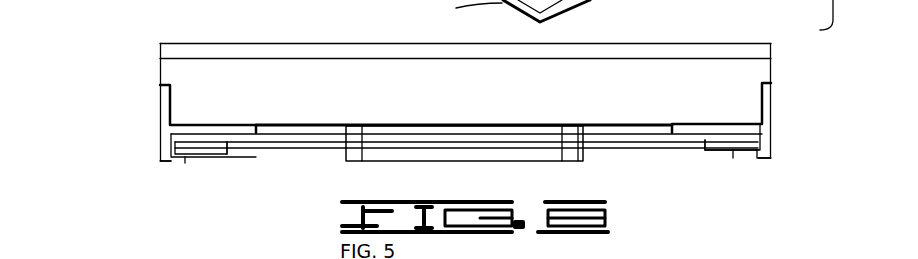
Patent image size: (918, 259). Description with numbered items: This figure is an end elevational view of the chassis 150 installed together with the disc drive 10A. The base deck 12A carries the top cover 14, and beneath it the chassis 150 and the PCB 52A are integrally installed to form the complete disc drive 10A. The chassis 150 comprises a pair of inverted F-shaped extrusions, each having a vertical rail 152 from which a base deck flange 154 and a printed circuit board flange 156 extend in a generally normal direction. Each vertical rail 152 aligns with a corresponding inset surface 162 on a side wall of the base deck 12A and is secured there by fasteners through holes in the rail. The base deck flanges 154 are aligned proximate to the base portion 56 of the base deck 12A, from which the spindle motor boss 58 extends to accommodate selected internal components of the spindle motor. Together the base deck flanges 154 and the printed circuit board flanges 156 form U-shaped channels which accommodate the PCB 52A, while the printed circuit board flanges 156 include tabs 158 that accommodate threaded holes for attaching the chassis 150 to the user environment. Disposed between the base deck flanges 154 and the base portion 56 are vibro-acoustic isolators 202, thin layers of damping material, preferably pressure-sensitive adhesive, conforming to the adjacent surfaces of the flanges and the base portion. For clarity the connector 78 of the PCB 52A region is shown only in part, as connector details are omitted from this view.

The disc drive 10A is at (155, 28).
The base deck 12A is at (173, 67).
The top cover 14 is at (325, 43).
The PCB 52A is at (250, 152).
The base portion 56 is at (332, 124).
The spindle motor boss 58 is at (465, 160).
The connector 78 is at (480, 4).
The chassis 150 is at (158, 132).
The vertical rail 152 is at (160, 113).
The base deck flange 154 is at (225, 135).
The printed circuit board flange 156 is at (172, 160).
The tab 158 is at (208, 157).
The inset surface 162 is at (177, 106).
The vibro-acoustic isolator 202 is at (240, 126).